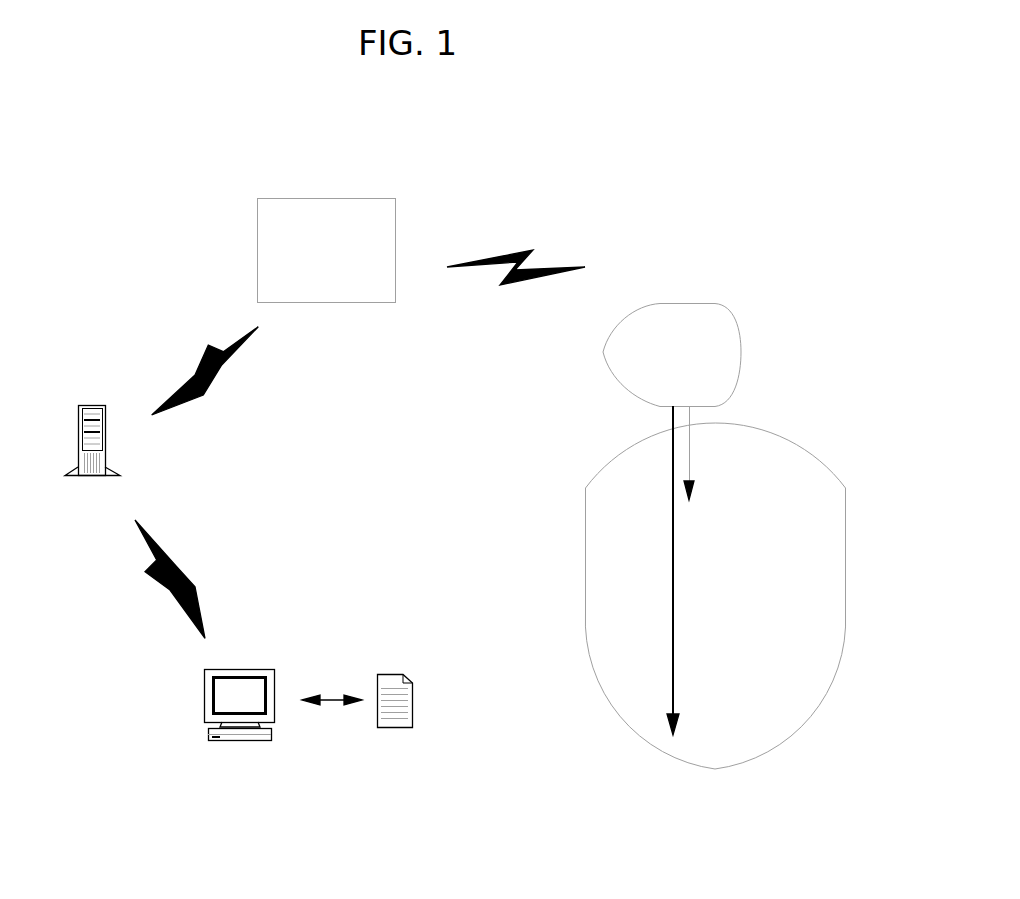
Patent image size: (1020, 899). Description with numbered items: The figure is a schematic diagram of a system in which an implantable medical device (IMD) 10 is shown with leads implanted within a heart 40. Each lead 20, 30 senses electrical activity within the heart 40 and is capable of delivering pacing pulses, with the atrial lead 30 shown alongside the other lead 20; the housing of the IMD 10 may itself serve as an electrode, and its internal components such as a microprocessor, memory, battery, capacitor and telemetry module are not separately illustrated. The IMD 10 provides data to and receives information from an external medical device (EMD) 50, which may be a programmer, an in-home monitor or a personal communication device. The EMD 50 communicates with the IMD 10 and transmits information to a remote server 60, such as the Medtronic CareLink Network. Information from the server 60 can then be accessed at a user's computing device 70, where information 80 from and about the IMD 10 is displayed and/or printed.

The implantable medical device (IMD) 10 is at (672, 302).
The lead 20 is at (673, 627).
The atrial lead 30 is at (691, 455).
The heart 40 is at (780, 432).
The external medical device (EMD) 50 is at (327, 197).
The remote server 60 is at (92, 403).
The computing device 70 is at (240, 669).
The information 80 is at (395, 674).